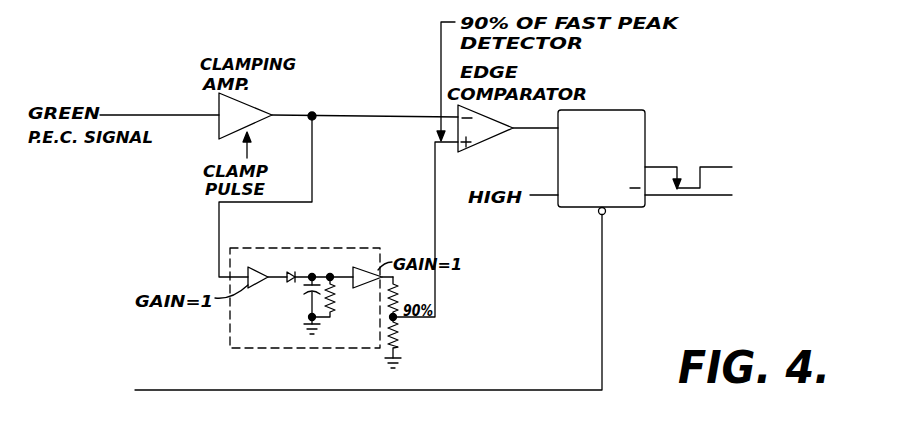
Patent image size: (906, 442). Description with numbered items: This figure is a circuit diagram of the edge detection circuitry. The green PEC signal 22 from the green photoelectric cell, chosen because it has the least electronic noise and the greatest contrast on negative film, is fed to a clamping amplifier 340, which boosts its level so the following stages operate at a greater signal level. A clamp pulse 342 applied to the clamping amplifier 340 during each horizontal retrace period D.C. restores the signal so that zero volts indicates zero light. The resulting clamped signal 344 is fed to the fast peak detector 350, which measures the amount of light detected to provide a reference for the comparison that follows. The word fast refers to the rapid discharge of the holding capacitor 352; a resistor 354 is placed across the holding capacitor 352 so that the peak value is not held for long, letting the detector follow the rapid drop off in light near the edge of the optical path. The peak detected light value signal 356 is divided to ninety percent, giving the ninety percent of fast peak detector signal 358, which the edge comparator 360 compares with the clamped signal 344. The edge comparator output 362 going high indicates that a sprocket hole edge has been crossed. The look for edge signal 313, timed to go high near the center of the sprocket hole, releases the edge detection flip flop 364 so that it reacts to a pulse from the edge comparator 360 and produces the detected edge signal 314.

The green PEC signal 22 is at (182, 112).
The clamping amplifier 340 is at (245, 116).
The clamp pulse 342 is at (263, 145).
The clamped signal 344 is at (338, 187).
The fast peak detector 350 is at (319, 280).
The holding capacitor 352 is at (303, 291).
The resistor 354 is at (332, 292).
The peak detected light value signal 356 is at (396, 274).
The 90% of fast peak detector signal 358 is at (434, 232).
The edge comparator 360 is at (478, 142).
The edge comparator output 362 is at (535, 120).
The edge detection flip flop 364 is at (621, 110).
The look for edge signal 313 is at (368, 318).
The detected edge signal 314 is at (750, 178).